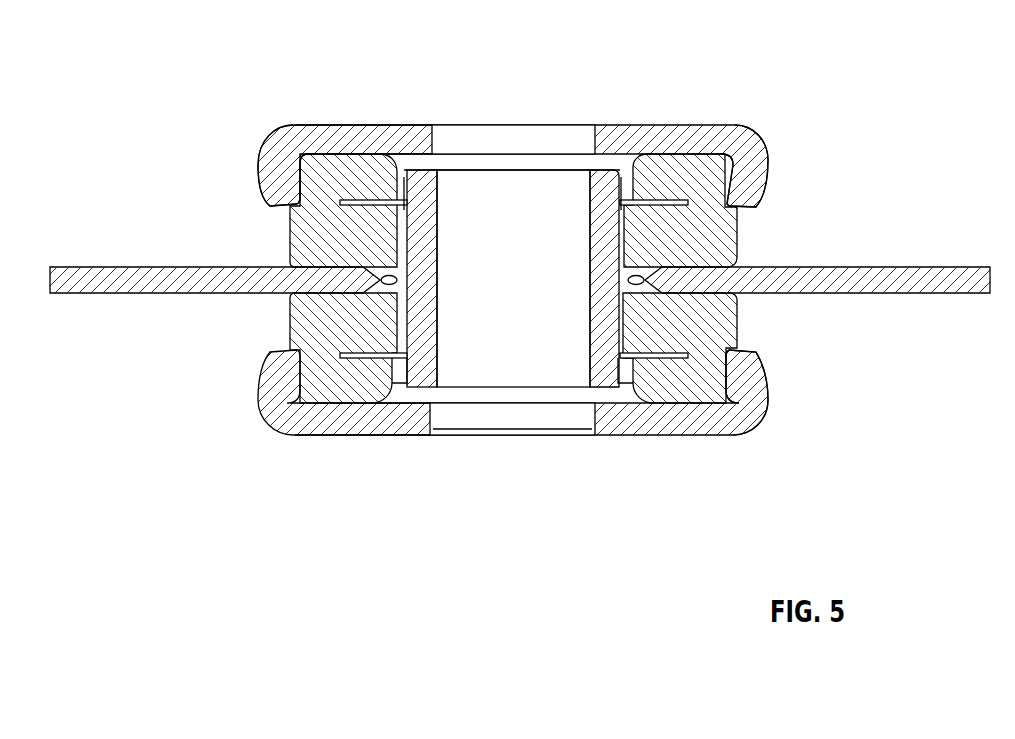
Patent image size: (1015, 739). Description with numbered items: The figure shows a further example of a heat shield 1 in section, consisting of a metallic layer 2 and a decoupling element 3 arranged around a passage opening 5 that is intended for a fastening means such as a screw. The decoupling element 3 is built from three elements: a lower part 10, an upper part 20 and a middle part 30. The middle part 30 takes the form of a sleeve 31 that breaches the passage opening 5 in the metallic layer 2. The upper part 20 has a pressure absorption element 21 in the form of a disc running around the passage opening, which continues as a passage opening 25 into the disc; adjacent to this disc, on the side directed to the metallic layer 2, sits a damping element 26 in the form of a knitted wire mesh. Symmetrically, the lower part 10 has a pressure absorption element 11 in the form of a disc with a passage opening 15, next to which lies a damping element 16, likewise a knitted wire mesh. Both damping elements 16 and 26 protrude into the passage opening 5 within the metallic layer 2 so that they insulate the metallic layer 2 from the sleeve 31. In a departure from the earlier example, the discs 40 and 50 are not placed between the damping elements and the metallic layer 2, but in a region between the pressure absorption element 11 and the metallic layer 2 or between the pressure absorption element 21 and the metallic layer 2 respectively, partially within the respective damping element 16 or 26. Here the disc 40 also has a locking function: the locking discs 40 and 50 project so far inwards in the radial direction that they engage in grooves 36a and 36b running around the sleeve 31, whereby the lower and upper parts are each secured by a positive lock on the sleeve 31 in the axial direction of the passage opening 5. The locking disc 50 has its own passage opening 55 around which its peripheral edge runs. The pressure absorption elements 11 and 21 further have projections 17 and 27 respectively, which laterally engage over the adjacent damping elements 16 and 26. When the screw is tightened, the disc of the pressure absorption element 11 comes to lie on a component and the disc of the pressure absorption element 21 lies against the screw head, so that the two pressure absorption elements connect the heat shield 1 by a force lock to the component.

The heat shield 1 is at (220, 473).
The metallic layer 2 is at (122, 287).
The decoupling element 3 is at (275, 158).
The passage opening 5 is at (504, 307).
The lower part 10 is at (278, 410).
The pressure absorption element 11 is at (352, 423).
The passage opening 15 is at (520, 418).
The damping element 16 is at (302, 318).
The projection 17 is at (758, 388).
The upper part 20 is at (729, 136).
The pressure absorption element 21 is at (337, 133).
The passage opening 25 is at (527, 140).
The damping element 26 is at (307, 232).
The projection 27 is at (753, 178).
The middle part 30 is at (427, 250).
The sleeve 31 is at (598, 315).
The groove 36a is at (613, 215).
The groove 36b is at (613, 353).
The locking disc 40 is at (657, 360).
The locking disc 50 is at (660, 200).
The passage opening 55 is at (410, 180).